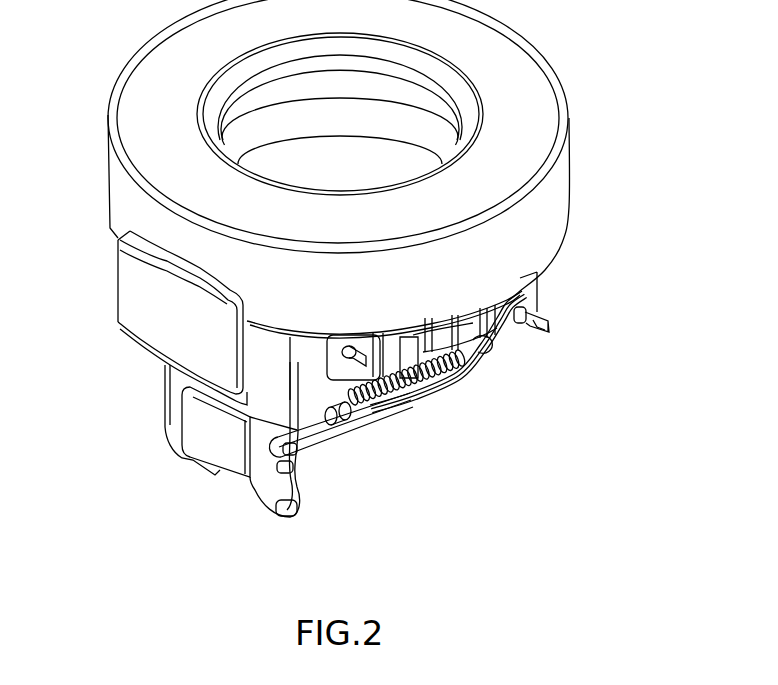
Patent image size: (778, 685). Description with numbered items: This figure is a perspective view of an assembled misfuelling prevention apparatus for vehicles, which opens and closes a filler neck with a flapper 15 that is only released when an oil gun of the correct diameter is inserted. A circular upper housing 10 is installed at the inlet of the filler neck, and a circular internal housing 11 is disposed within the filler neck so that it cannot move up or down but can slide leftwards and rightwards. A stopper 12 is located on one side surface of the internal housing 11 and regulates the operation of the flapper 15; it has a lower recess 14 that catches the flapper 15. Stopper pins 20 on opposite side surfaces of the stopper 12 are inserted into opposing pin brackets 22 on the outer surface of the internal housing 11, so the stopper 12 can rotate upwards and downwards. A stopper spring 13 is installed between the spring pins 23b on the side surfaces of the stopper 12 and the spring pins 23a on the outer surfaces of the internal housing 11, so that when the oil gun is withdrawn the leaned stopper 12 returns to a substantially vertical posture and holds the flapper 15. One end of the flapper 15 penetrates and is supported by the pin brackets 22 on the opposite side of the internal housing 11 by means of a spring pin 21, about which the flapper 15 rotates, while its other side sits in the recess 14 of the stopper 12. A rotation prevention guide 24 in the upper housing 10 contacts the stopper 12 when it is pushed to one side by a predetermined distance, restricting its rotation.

The upper housing 10 is at (560, 178).
The pin brackets 22 is at (527, 290).
The spring pin 21 is at (548, 318).
The internal housing 11 is at (540, 328).
The spring pins 23a is at (480, 352).
The stopper spring 13 is at (370, 340).
The stopper pin 20 is at (380, 400).
The spring pins 23b is at (355, 415).
The flapper 15 is at (320, 440).
The stopper 12 is at (210, 429).
The recess 14 is at (307, 460).
The rotation prevention guide 24 is at (140, 314).